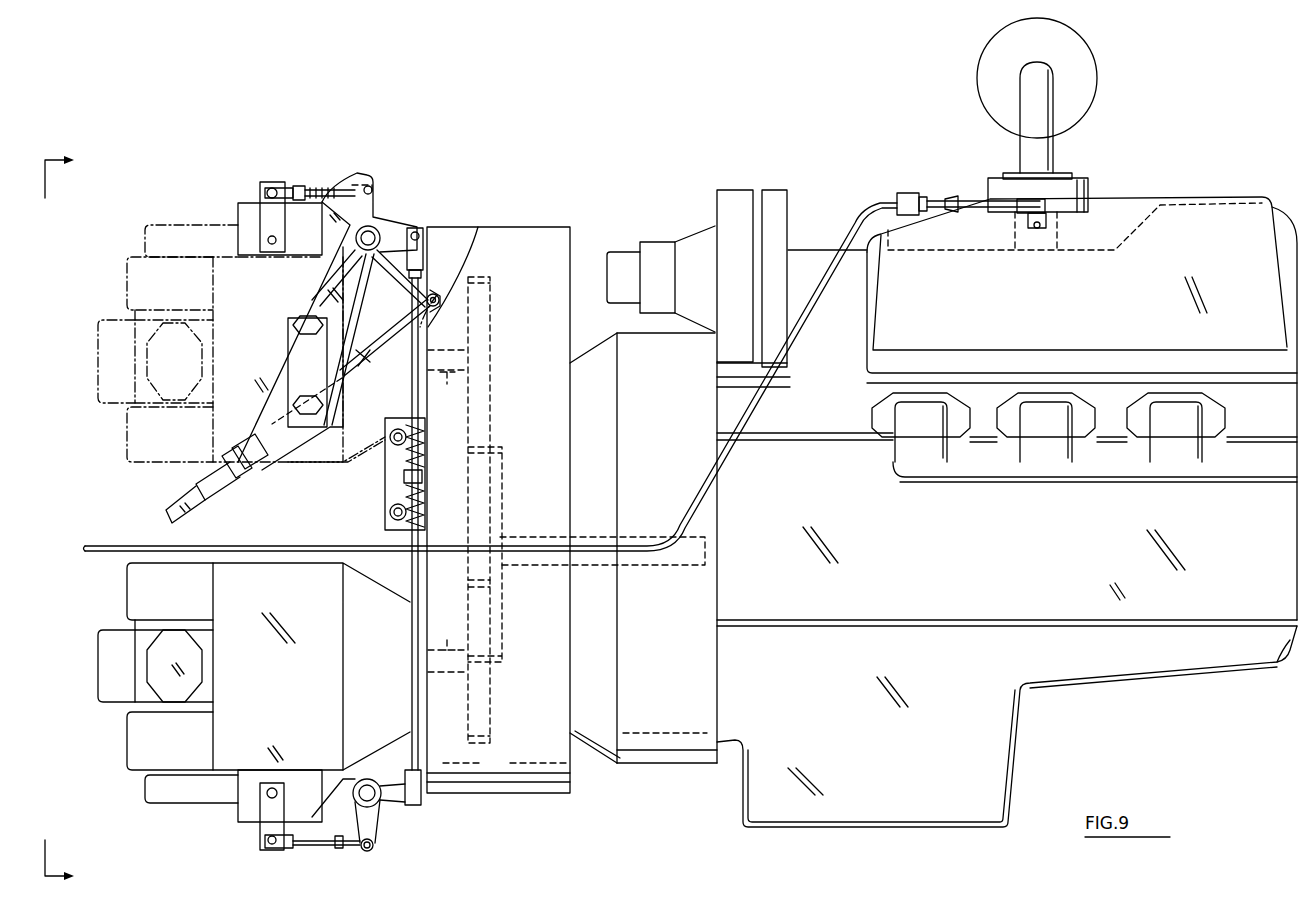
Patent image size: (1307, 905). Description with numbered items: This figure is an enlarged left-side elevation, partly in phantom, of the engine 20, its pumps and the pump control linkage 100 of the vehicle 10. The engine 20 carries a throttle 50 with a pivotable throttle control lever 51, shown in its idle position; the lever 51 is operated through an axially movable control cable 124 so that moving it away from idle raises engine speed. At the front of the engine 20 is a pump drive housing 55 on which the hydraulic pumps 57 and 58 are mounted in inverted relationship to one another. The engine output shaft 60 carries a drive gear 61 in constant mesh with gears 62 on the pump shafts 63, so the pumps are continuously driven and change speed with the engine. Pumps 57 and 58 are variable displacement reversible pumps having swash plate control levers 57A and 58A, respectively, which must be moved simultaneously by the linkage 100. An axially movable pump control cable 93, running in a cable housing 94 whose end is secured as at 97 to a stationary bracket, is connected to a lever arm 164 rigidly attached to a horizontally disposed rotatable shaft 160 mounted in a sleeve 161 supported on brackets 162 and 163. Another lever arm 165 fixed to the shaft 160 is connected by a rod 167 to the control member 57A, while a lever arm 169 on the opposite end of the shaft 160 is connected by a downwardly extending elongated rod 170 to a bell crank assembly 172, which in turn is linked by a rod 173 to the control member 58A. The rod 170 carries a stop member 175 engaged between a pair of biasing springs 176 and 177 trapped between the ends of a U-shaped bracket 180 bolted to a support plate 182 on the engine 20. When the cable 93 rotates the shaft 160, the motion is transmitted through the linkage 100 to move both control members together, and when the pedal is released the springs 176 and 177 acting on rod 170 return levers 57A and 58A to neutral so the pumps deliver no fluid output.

The vehicle 10 is at (72, 519).
The engine 20 is at (1212, 212).
The throttle 50 is at (1058, 193).
The throttle control lever 51 is at (1060, 212).
The pump drive housing 55 is at (522, 230).
The hydraulic pump 57 is at (270, 298).
The swash plate control lever 57A is at (262, 180).
The hydraulic pump 58 is at (300, 608).
The swash plate control lever 58A is at (262, 838).
The output shaft 60 is at (655, 567).
The drive gear 61 is at (502, 488).
The gears 62 is at (490, 400).
The pump shafts 63 is at (448, 511).
The pump control cable 93 is at (378, 348).
The cable housing 94 is at (195, 497).
The cable housing securement 97 is at (244, 484).
The linkage 100 is at (412, 195).
The control cable 124 is at (115, 552).
The rotatable shaft 160 is at (356, 234).
The sleeve 161 is at (356, 241).
The bracket 162 is at (267, 472).
The bracket 163 is at (352, 306).
The lever arm 164 is at (434, 293).
The lever arm 165 is at (374, 200).
The rod 167 is at (312, 186).
The lever arm 169 is at (414, 228).
The elongated rod 170 is at (411, 562).
The bell crank assembly 172 is at (393, 803).
The rod 173 is at (322, 848).
The stop member 175 is at (422, 474).
The biasing spring 176 is at (393, 444).
The biasing spring 177 is at (405, 488).
The U-shaped bracket 180 is at (390, 513).
The support plate 182 is at (418, 440).